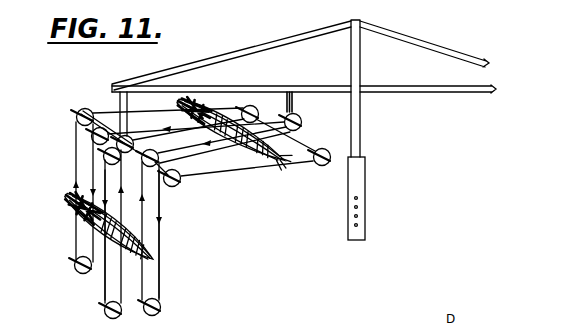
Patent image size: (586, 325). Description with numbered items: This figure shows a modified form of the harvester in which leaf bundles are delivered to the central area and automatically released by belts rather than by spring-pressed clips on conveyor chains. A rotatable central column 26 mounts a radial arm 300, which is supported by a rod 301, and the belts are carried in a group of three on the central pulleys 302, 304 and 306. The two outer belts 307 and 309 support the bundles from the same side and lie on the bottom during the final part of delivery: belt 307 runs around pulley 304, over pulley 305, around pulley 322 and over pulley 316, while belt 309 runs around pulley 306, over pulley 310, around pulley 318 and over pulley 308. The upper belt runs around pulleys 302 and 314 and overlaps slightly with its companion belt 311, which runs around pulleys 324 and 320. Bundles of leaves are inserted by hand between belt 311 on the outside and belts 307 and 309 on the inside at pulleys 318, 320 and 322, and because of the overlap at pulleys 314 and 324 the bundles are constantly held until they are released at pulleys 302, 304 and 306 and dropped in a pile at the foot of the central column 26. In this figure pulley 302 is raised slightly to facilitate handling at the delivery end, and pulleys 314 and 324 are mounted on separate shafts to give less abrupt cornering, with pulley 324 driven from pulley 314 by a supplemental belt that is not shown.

The rotatable central column 26 is at (357, 190).
The radial arm 300 is at (276, 87).
The rod 301 is at (243, 50).
The central pulley 302 is at (300, 118).
The central pulley 304 is at (247, 106).
The pulley 305 is at (94, 134).
The central pulley 306 is at (320, 167).
The outer belt 307 is at (73, 222).
The pulley 308 is at (160, 158).
The outer belt 309 is at (162, 260).
The pulley 310 is at (183, 180).
The companion belt 311 is at (103, 280).
The pulley 314 is at (126, 137).
The pulley 316 is at (83, 108).
The pulley 318 is at (160, 306).
The pulley 320 is at (105, 313).
The pulley 322 is at (75, 268).
The pulley 324 is at (104, 158).